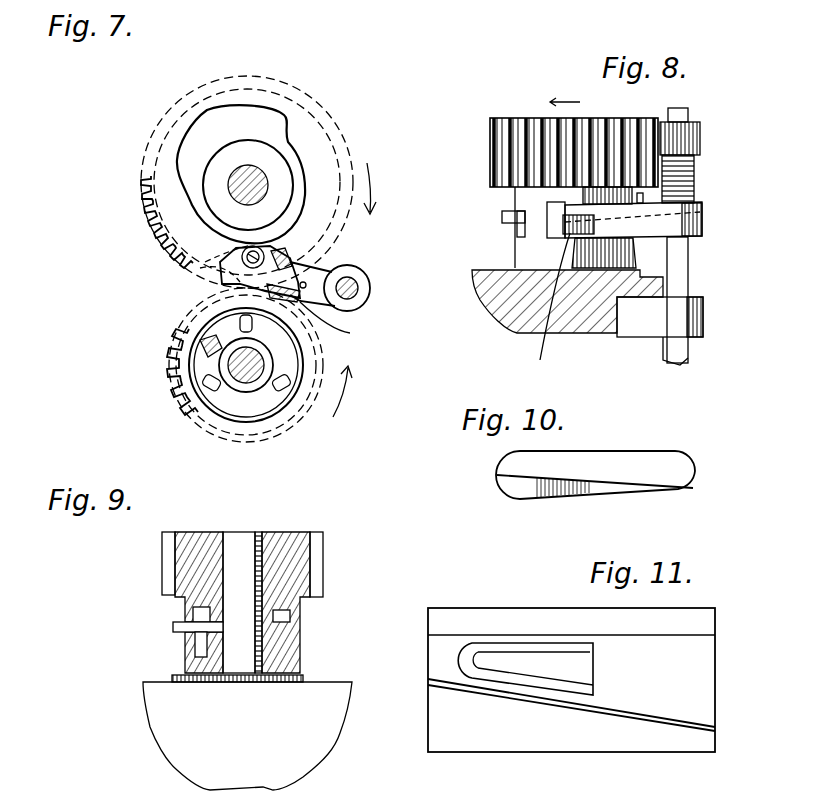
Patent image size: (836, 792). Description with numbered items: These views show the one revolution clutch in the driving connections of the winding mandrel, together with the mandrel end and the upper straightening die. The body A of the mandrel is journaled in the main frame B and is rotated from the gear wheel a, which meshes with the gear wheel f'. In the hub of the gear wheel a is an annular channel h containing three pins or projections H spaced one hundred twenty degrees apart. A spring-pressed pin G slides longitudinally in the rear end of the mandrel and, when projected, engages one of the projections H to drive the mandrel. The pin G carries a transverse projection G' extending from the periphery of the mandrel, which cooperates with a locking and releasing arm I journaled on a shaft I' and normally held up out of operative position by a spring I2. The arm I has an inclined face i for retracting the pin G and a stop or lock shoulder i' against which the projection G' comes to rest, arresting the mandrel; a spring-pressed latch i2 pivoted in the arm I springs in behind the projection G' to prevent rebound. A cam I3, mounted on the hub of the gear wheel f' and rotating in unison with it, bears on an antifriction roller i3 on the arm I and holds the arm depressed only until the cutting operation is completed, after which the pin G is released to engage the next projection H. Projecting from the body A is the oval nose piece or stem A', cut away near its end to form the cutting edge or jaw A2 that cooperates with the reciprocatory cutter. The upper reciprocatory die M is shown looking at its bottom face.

In FIG. 7, the cam I3 is at (205, 133).
In FIG. 7, the gear wheel f' is at (144, 221).
In FIG. 7, the antifriction roller i3 is at (262, 250).
In FIG. 8, the antifriction roller i3 is at (570, 225).
In FIG. 7, the stop or lock shoulder i' is at (218, 271).
In FIG. 8, the stop or lock shoulder i' is at (555, 298).
In FIG. 7, the spring-pressed latch i2 is at (287, 282).
In FIG. 7, the locking and releasing arm I is at (334, 268).
In FIG. 8, the locking and releasing arm I is at (639, 283).
In FIG. 7, the shaft I' is at (365, 288).
In FIG. 8, the shaft I' is at (693, 123).
In FIG. 8, the spring I2 is at (696, 165).
In FIG. 7, the inclined face i is at (325, 326).
In FIG. 8, the inclined face i is at (654, 206).
In FIG. 7, the gear wheel a is at (185, 395).
In FIG. 8, the gear wheel a is at (490, 170).
In FIG. 9, the gear wheel a is at (318, 545).
In FIG. 7, the annular channel h is at (250, 400).
In FIG. 9, the annular channel h is at (205, 605).
In FIG. 7, the pins or projections H is at (235, 325).
In FIG. 7, the spring-pressed pin G is at (176, 345).
In FIG. 9, the spring-pressed pin G is at (206, 611).
In FIG. 8, the transverse projection G' is at (491, 218).
In FIG. 9, the transverse projection G' is at (173, 639).
In FIG. 8, the body of the mandrel A is at (543, 227).
In FIG. 9, the body of the mandrel A is at (247, 704).
In FIG. 8, the main frame B is at (590, 333).
In FIG. 10, the nose piece or stem A' is at (595, 489).
In FIG. 10, the cutting edge or jaw A2 is at (498, 473).
In FIG. 11, the upper reciprocatory die M is at (518, 647).